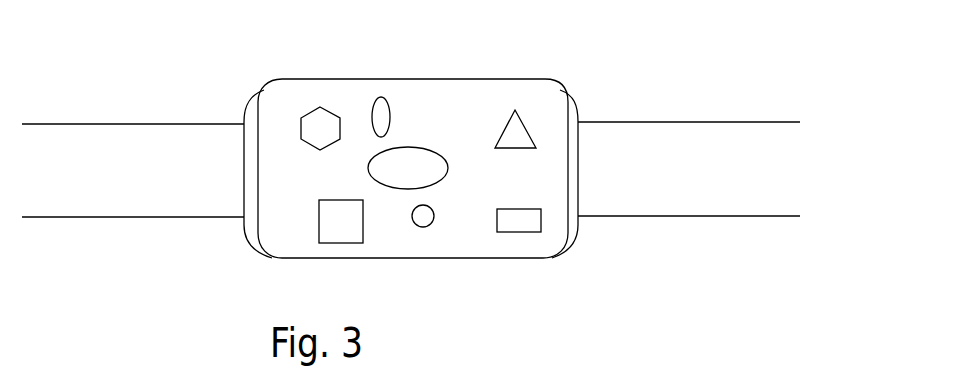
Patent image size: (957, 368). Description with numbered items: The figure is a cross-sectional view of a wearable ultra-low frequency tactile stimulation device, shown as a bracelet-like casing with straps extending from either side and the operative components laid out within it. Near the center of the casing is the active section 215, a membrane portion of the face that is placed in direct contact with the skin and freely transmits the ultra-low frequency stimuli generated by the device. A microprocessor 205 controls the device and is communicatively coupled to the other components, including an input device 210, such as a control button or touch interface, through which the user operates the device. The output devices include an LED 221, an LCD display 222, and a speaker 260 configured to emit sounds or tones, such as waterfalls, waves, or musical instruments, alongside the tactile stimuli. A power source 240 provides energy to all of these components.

The microprocessor 205 is at (528, 128).
The input device 210 is at (432, 223).
The active section 215 is at (368, 168).
The LED 221 is at (305, 113).
The LCD display 222 is at (319, 223).
The power source 240 is at (541, 222).
The speaker 260 is at (390, 103).